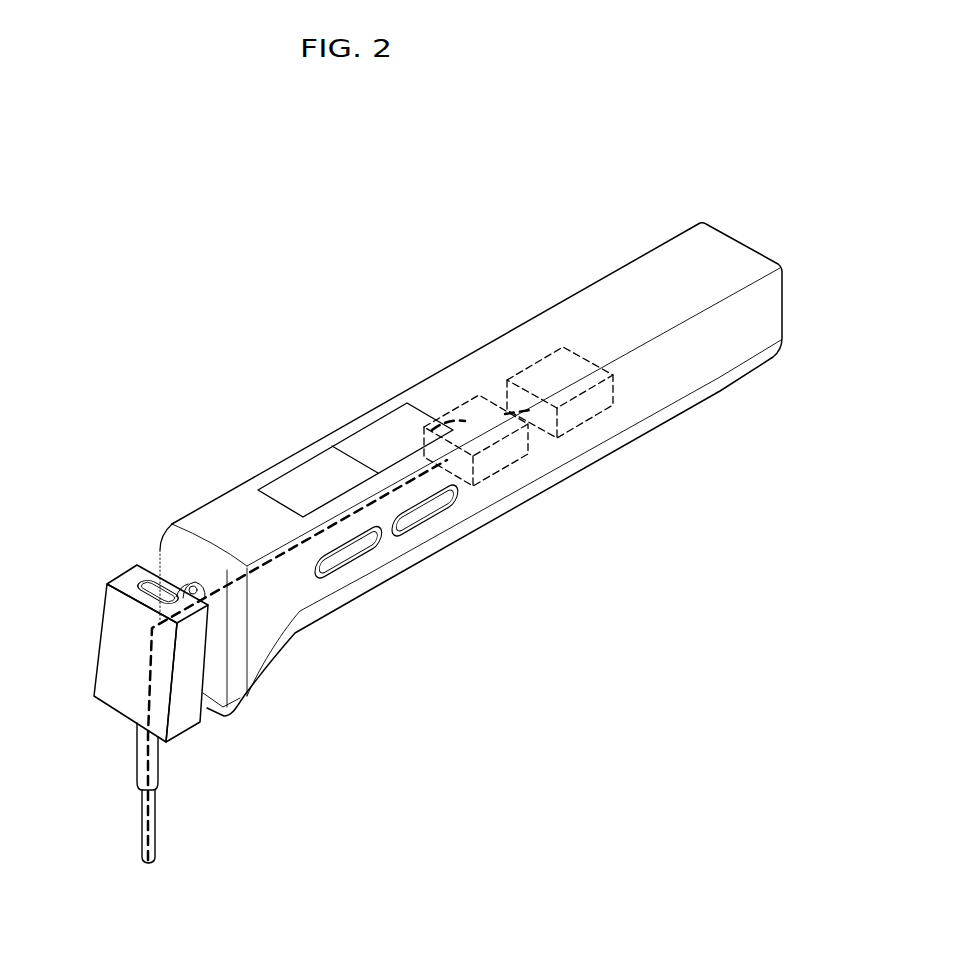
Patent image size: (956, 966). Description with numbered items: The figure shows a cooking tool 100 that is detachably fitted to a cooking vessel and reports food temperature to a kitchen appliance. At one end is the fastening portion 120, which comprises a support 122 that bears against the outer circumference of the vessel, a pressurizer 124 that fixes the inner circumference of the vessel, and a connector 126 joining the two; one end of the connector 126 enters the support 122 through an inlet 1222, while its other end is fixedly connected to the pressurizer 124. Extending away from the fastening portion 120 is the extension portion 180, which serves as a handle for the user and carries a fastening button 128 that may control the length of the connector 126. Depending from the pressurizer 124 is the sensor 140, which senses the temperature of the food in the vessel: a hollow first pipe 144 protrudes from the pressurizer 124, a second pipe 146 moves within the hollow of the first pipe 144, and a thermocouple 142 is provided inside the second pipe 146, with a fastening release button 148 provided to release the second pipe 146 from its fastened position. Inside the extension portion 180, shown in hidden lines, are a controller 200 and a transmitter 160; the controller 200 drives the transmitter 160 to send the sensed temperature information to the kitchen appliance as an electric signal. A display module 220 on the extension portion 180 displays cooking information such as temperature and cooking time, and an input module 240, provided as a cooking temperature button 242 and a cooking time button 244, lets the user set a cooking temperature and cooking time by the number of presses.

The cooking tool 100 is at (690, 182).
The extension portion 180 is at (603, 292).
The fastening portion 120 is at (246, 658).
The support 122 is at (220, 670).
The pressurizer 124 is at (188, 723).
The connector 126 is at (187, 587).
The fastening button 128 is at (317, 627).
The inlet 1222 is at (198, 585).
The sensor 140 is at (133, 826).
The thermocouple 142 is at (148, 863).
The first pipe 144 is at (160, 762).
The second pipe 146 is at (155, 823).
The fastening release button 148 is at (150, 588).
The transmitter 160 is at (587, 410).
The controller 200 is at (500, 462).
The display module 220 is at (327, 452).
The input module 240 is at (433, 562).
The cooking temperature button 242 is at (342, 568).
The cooking time button 244 is at (413, 527).